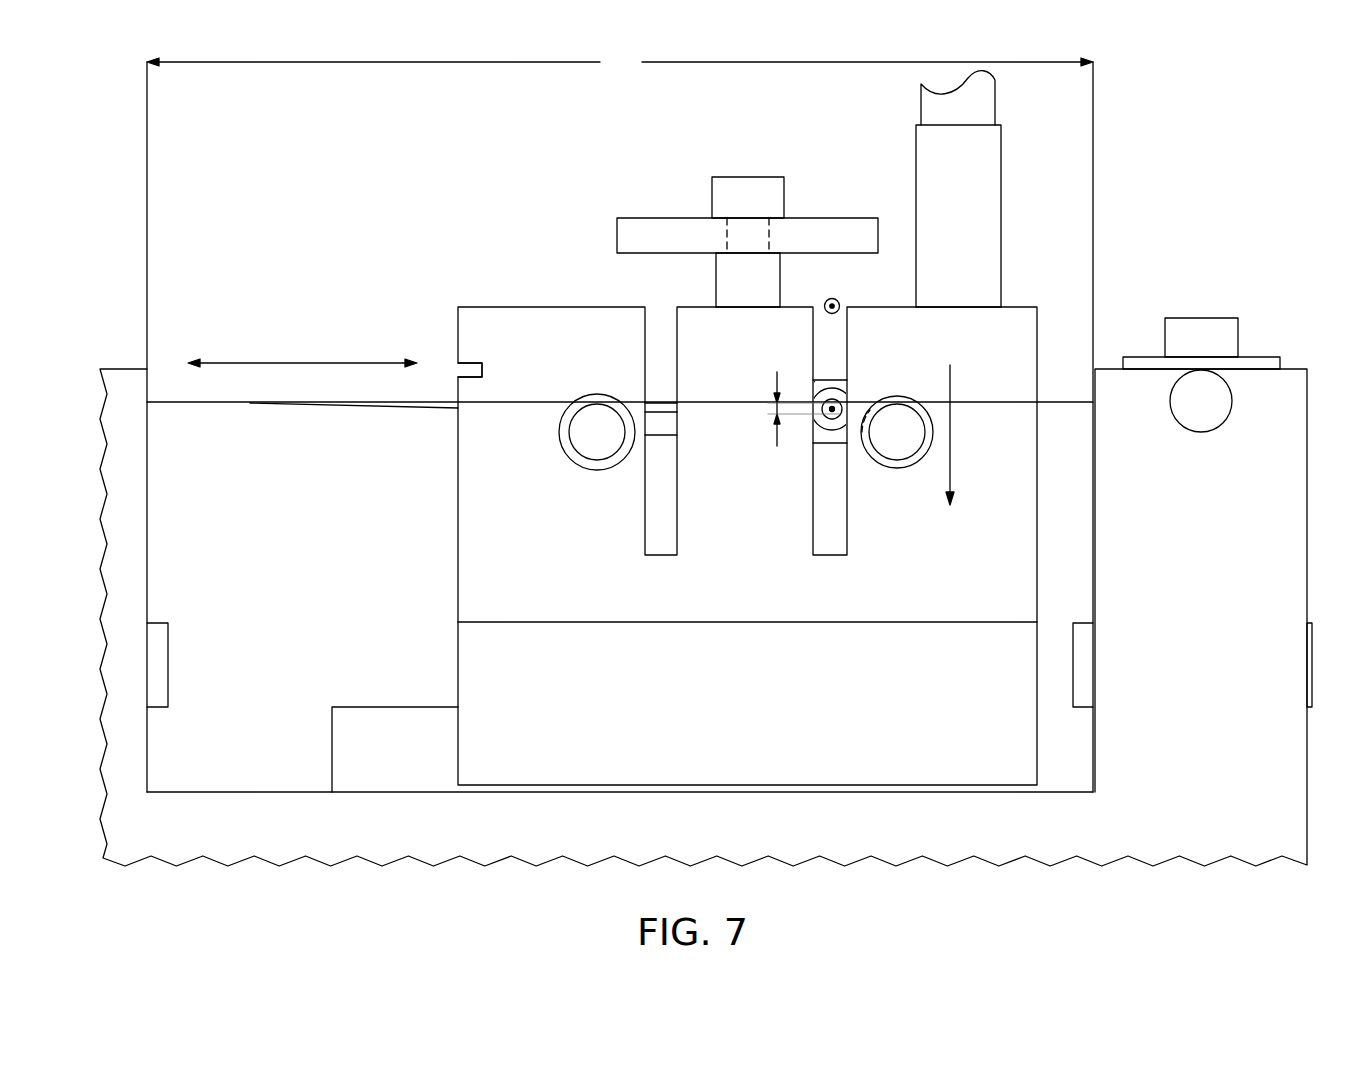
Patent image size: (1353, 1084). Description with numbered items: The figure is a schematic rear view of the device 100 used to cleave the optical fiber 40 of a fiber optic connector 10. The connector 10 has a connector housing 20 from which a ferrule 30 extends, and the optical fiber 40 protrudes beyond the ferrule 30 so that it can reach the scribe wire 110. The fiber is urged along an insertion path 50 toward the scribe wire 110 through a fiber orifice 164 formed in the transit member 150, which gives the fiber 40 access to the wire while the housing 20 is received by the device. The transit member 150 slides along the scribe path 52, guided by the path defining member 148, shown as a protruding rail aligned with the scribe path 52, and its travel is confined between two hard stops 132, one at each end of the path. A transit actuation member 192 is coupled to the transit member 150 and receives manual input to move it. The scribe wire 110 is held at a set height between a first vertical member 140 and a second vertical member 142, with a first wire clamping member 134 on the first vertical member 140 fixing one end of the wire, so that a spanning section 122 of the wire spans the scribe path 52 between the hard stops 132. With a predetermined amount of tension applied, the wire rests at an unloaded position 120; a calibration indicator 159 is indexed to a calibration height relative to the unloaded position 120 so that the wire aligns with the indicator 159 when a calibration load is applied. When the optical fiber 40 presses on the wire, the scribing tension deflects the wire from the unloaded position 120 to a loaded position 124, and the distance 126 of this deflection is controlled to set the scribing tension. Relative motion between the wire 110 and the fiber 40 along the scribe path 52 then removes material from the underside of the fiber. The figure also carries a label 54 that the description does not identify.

The fiber optic connector 10 is at (829, 370).
The connector housing 20 is at (818, 383).
The ferrule 30 is at (828, 422).
The optical fiber 40 is at (831, 410).
The insertion path 50 is at (952, 430).
The scribe path 52 is at (298, 362).
The pivot axis 54 is at (839, 300).
The device 100 is at (1203, 212).
The scribe wire 110 is at (421, 402).
The unloaded position 120 is at (856, 395).
The spanning section 122 is at (620, 62).
The loaded position 124 is at (856, 423).
The distance of deflection 126 is at (776, 406).
The hard stop 132 is at (158, 700).
The first wire clamping member 134 is at (1258, 362).
The first vertical member 140 is at (1138, 388).
The second vertical member 142 is at (123, 380).
The path defining member 148 is at (362, 713).
The transit member 150 is at (468, 596).
The calibration indicator 159 is at (477, 371).
The fiber orifice 164 is at (842, 342).
The transit actuation member 192 is at (1001, 224).